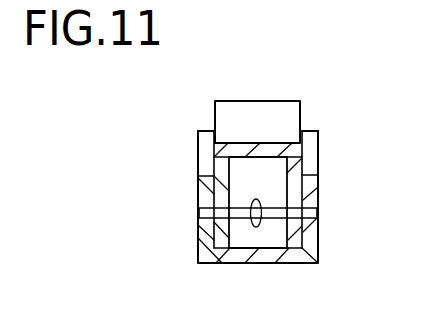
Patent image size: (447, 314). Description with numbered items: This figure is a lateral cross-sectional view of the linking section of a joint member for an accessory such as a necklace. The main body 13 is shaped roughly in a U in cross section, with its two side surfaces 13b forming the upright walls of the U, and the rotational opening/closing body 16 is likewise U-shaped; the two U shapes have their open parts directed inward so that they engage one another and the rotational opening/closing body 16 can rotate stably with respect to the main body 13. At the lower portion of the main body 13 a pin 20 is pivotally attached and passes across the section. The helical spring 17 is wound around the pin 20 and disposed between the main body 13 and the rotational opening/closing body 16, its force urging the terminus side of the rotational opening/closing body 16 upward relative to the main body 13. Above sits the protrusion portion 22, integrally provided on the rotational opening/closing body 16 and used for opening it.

The main body 13 is at (268, 268).
The side surfaces 13b is at (213, 181).
The rotational opening/closing body 16 is at (326, 145).
The helical spring 17 is at (247, 192).
The pin 20 is at (318, 212).
The protrusion portion 22 is at (288, 115).